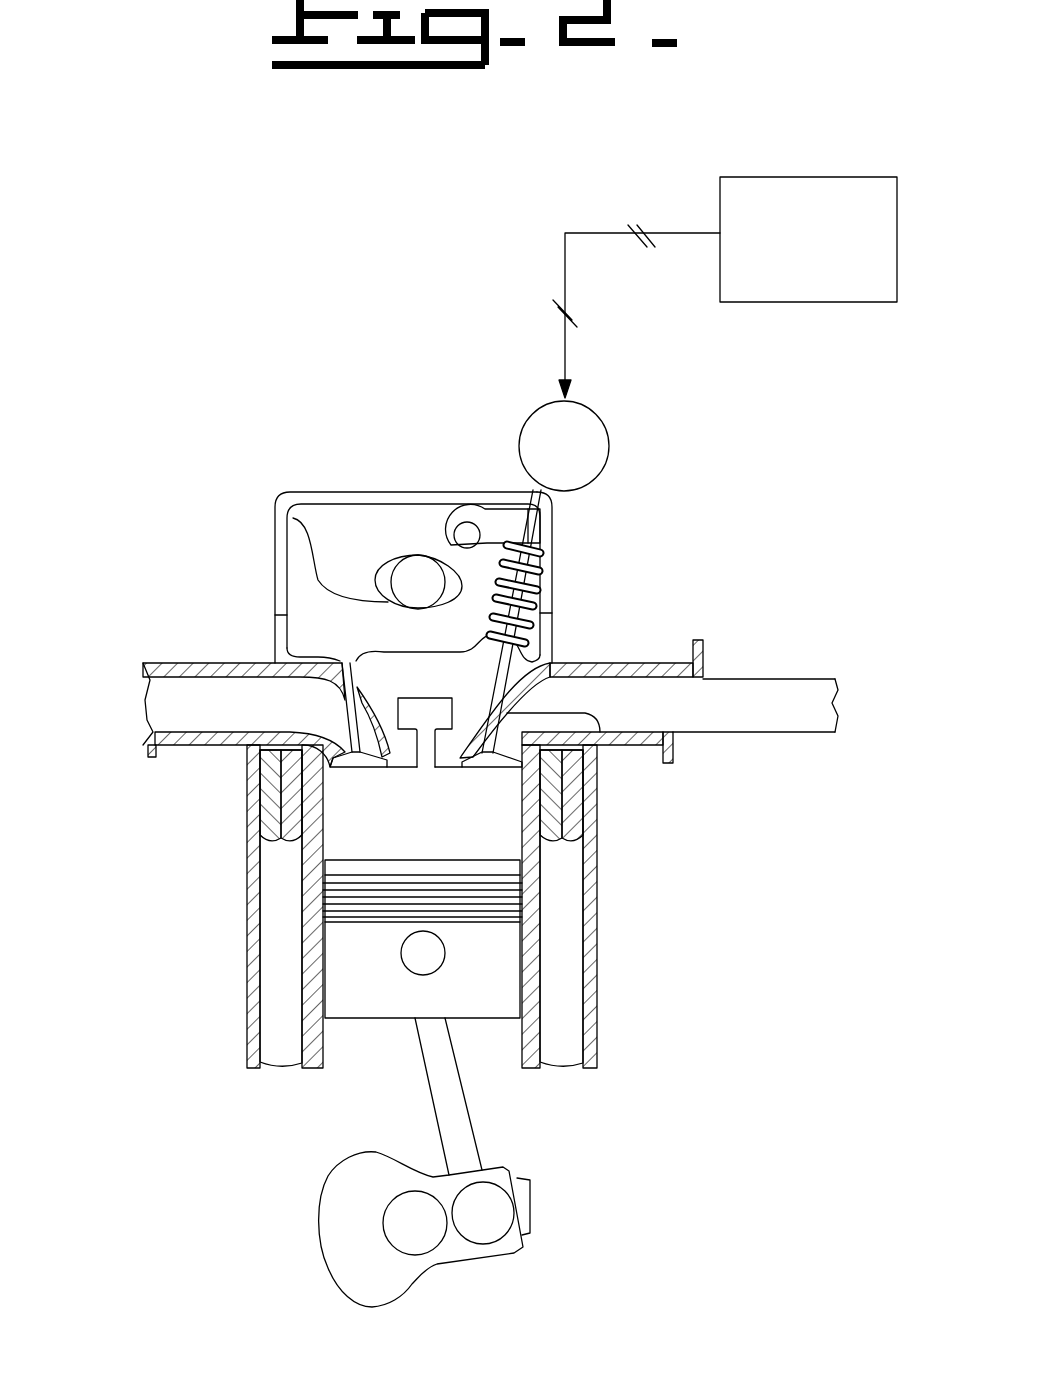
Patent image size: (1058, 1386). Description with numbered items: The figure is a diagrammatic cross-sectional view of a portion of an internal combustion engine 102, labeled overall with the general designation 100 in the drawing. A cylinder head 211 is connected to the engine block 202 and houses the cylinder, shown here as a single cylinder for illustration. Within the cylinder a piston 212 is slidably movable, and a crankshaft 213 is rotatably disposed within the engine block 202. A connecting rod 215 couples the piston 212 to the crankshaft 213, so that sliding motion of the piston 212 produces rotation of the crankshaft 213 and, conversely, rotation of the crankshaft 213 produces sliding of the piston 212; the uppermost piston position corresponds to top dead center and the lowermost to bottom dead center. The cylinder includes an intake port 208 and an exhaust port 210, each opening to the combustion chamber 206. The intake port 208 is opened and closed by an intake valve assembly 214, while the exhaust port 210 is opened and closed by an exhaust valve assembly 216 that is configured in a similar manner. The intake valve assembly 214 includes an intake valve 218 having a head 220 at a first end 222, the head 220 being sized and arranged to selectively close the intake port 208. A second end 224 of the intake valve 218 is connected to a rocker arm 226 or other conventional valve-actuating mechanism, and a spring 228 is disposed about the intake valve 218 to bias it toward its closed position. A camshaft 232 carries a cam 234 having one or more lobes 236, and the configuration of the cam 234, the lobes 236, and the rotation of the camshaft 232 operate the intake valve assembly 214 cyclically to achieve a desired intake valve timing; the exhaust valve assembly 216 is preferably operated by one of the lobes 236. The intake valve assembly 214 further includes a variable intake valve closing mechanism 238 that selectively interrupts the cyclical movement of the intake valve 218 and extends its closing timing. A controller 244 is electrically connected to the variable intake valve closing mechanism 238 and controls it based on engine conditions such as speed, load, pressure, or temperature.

The engine system 100 is at (355, 224).
The internal combustion engine 102 is at (314, 417).
The engine block 202 is at (597, 1027).
The combustion chamber 206 is at (379, 822).
The intake port 208 is at (673, 695).
The exhaust port 210 is at (168, 708).
The cylinder head 211 is at (250, 554).
The piston 212 is at (497, 992).
The crankshaft 213 is at (397, 1273).
The intake valve assembly 214 is at (600, 522).
The connecting rod 215 is at (450, 1102).
The exhaust valve assembly 216 is at (337, 659).
The intake valve 218 is at (600, 743).
The head 220 is at (483, 770).
The first end 222 is at (507, 780).
The second end 224 is at (511, 505).
The rocker arm 226 is at (467, 509).
The spring 228 is at (530, 577).
The camshaft 232 is at (422, 567).
The cam 234 is at (287, 513).
The lobes 236 is at (357, 560).
The variable intake valve closing mechanism 238 is at (608, 430).
The controller 244 is at (832, 254).